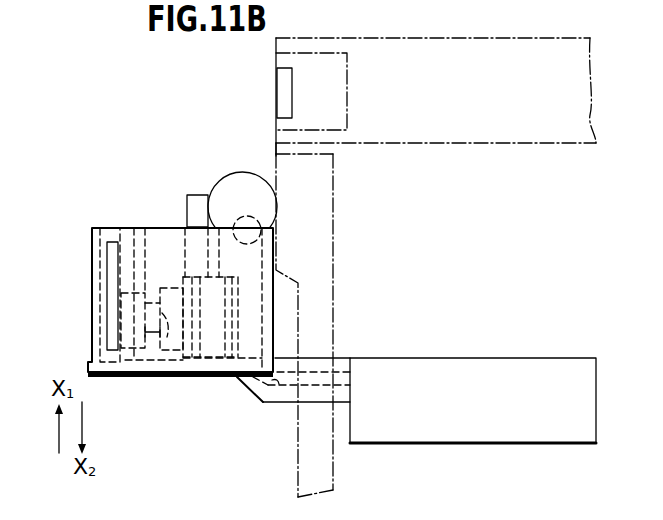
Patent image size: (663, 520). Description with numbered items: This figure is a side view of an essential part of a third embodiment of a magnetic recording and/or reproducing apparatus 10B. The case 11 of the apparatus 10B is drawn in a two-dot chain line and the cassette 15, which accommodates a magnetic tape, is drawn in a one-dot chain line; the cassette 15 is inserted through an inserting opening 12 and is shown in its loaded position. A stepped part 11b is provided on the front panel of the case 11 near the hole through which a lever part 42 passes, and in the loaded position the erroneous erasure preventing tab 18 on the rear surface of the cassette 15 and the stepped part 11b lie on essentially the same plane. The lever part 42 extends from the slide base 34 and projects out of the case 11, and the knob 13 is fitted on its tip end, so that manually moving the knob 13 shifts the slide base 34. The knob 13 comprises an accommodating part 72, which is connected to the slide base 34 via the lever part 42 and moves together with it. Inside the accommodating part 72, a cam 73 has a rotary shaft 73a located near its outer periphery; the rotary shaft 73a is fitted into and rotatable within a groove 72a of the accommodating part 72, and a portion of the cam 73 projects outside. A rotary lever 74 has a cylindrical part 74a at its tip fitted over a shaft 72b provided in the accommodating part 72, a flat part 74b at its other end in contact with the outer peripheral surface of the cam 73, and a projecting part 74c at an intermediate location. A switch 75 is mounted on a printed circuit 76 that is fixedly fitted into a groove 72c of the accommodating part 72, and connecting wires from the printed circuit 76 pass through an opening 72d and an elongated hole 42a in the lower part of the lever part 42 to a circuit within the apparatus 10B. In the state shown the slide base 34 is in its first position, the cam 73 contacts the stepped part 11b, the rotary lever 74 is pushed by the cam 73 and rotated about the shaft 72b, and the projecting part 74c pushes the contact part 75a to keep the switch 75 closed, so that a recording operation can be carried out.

The magnetic recording and/or reproducing apparatus 10B is at (135, 140).
The case 11 is at (332, 176).
The stepped part 11b is at (276, 155).
The inserting opening 12 is at (325, 153).
The knob 13 is at (84, 258).
The cassette 15 is at (460, 38).
The erroneous erasure preventing tab 18 is at (276, 82).
The slide base 34 is at (423, 443).
The lever part 42 is at (322, 358).
The elongated hole 42a is at (278, 381).
The accommodating part 72 is at (118, 377).
The groove 72a is at (268, 220).
The shaft 72b is at (212, 347).
The groove 72c is at (110, 233).
The opening 72d is at (246, 360).
The cam 73 is at (248, 180).
The rotary shaft 73a is at (243, 228).
The rotary lever 74 is at (187, 240).
The cylindrical part 74a is at (195, 377).
The flat part 74b is at (197, 195).
The projecting part 74c is at (147, 233).
The switch 75 is at (146, 374).
The contact part 75a is at (167, 374).
The printed circuit 76 is at (110, 295).